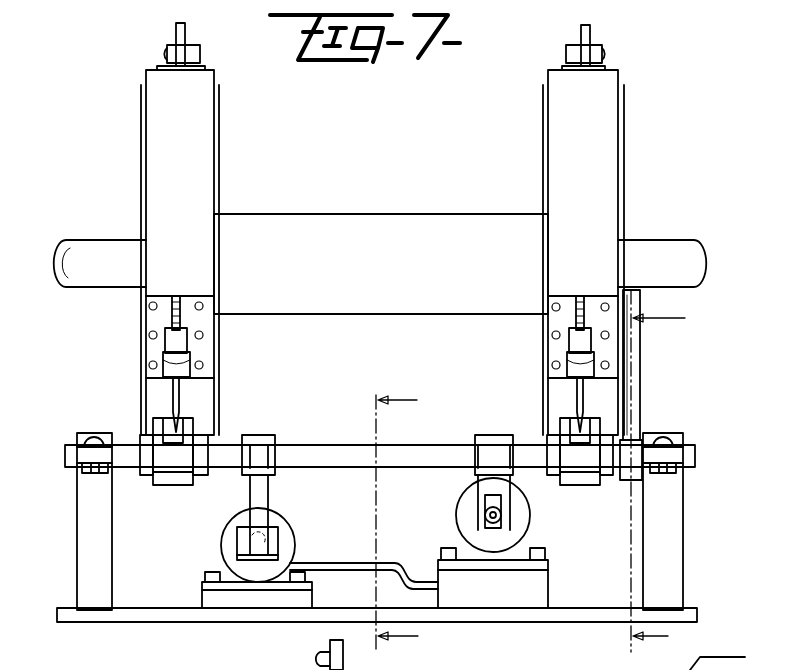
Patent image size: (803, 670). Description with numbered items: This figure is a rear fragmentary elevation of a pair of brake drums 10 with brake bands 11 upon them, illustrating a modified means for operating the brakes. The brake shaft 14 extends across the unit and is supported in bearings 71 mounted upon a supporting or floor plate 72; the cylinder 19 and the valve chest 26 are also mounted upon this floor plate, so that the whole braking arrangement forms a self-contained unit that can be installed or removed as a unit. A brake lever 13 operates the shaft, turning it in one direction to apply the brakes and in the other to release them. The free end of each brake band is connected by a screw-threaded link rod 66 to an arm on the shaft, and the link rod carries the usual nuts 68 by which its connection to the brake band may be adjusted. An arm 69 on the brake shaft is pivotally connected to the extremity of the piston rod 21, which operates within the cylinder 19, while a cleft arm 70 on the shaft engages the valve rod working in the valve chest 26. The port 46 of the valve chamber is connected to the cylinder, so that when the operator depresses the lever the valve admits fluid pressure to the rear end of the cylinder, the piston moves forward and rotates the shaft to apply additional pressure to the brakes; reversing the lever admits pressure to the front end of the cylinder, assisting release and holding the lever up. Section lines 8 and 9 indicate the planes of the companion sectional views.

The section line 8- 8 is at (665, 471).
The section line 9- 9 is at (395, 520).
The brake drum 10 is at (221, 165).
The brake band 11 is at (197, 215).
The brake lever 13 is at (636, 386).
The brake shaft 14 is at (314, 450).
The cylinder 19 is at (222, 542).
The piston rod 21 is at (246, 553).
The valve chest 26 is at (521, 530).
The port 46 is at (332, 560).
The screw-threaded link rod 66 is at (172, 397).
The nuts 68 is at (190, 388).
The arm 69 is at (266, 495).
The cleft arm 70 is at (497, 520).
The bearings 71 is at (79, 575).
The floor plate 72 is at (591, 612).